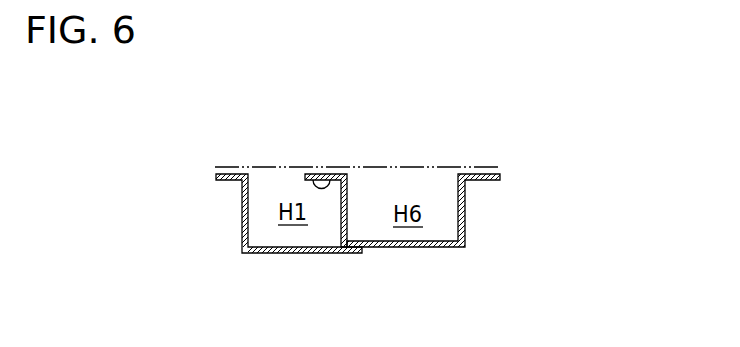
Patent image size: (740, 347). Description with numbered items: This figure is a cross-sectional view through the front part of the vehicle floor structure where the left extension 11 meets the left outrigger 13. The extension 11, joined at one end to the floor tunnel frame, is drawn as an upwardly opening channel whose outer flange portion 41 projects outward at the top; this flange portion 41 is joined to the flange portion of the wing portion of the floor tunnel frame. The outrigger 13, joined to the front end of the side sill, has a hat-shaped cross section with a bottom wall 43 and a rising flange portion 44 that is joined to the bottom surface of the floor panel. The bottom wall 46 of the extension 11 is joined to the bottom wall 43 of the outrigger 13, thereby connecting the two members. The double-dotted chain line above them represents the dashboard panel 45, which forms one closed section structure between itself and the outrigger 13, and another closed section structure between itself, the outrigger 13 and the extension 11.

The flange portion 41 is at (227, 180).
The extension 11 is at (241, 233).
The bottom wall 46 is at (300, 254).
The rising flange portion 44 is at (323, 180).
The dashboard panel 45 is at (408, 167).
The bottom wall 43 is at (427, 248).
The outrigger 13 is at (466, 212).